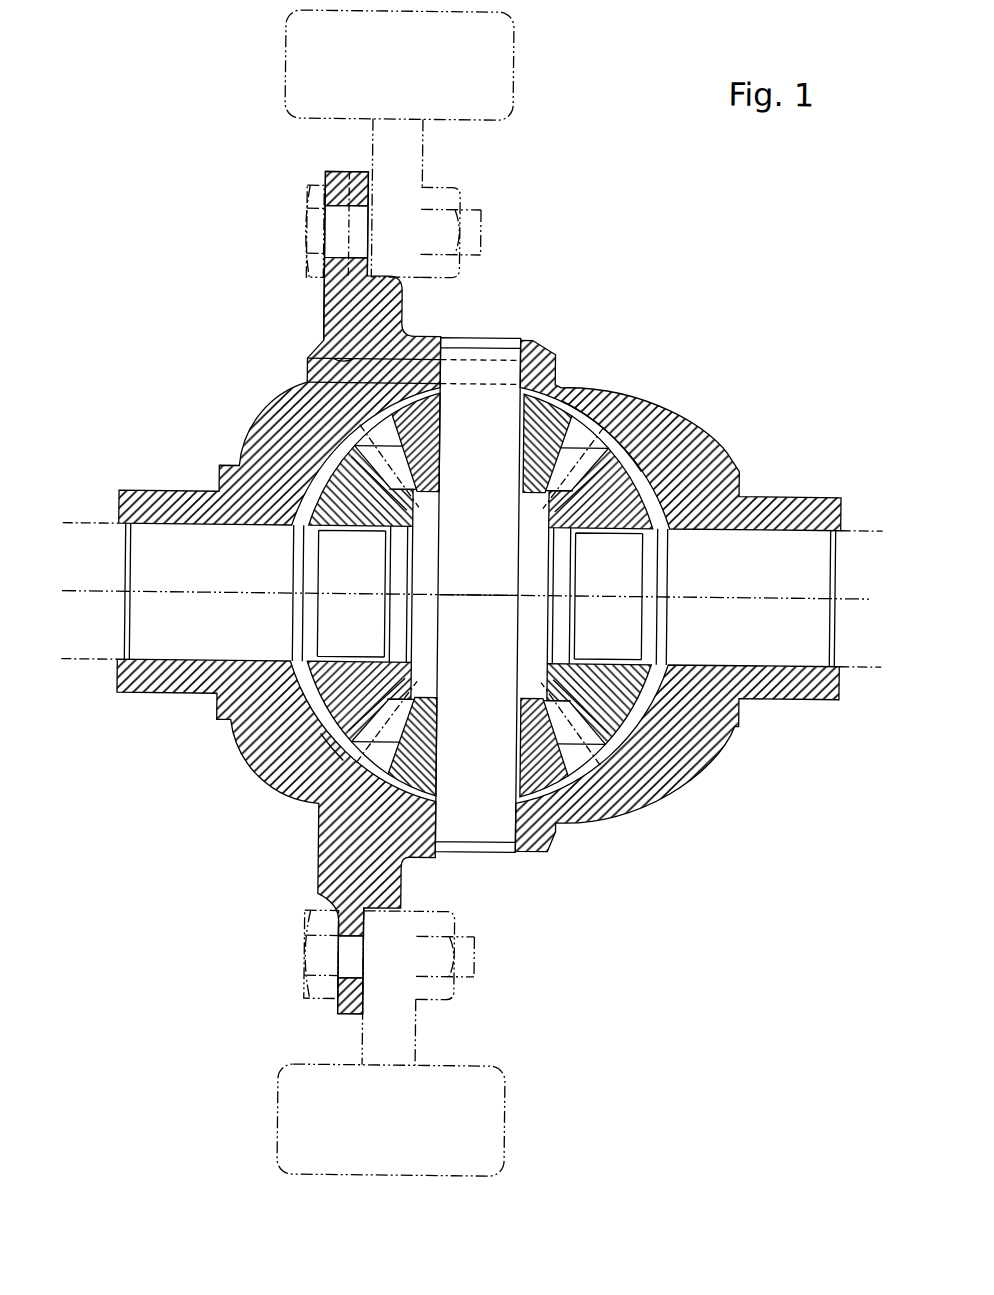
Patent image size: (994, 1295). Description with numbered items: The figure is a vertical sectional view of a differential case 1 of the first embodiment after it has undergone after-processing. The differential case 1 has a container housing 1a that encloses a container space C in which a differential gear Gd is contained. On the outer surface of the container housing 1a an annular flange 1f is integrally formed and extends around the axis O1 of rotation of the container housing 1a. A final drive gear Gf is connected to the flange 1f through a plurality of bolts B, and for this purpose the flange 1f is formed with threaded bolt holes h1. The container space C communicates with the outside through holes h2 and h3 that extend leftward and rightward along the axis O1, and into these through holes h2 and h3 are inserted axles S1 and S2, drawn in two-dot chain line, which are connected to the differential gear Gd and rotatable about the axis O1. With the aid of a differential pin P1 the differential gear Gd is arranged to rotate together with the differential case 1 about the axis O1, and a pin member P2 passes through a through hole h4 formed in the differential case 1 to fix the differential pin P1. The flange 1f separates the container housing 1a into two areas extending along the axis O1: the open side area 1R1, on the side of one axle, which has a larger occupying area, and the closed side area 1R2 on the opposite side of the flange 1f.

The differential case 1 is at (479, 571).
The open side area 1R1 is at (557, 312).
The closed side area 1R2 is at (243, 410).
The annular flange 1f is at (321, 174).
The container housing 1a is at (616, 406).
The bolt holes h1 is at (320, 230).
The through hole h2 is at (760, 622).
The through hole h3 is at (192, 618).
The through hole h4 is at (316, 354).
The bolts B is at (454, 198).
The final drive gear Gf is at (510, 57).
The differential gear Gd is at (622, 442).
The differential pin P1 is at (478, 752).
The pin member P2 is at (418, 366).
The axle S1 is at (870, 528).
The axle S2 is at (90, 524).
The axis of rotation O1 is at (487, 602).
The container space C is at (338, 742).